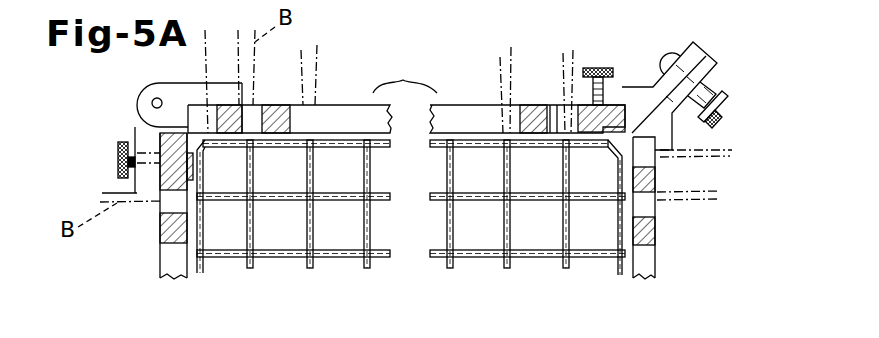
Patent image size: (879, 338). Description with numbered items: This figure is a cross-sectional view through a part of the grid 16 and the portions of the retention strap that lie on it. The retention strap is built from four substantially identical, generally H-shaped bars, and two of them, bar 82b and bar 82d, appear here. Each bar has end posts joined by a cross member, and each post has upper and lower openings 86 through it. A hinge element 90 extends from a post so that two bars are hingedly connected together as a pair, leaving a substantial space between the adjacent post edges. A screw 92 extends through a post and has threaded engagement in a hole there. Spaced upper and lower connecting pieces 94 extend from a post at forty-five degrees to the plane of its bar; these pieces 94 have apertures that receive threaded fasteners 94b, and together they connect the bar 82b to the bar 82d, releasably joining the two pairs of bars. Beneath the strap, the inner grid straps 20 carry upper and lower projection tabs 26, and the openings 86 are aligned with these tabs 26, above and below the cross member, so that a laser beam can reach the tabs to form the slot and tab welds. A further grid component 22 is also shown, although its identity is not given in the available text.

The wire rack 16 is at (407, 226).
The inner grid strap 20 is at (282, 192).
The side frame bar 22 is at (339, 142).
The projection tab 26 is at (190, 184).
The bar 82b is at (538, 106).
The bar 82d is at (656, 228).
The opening 86 is at (258, 108).
The hinge element 90 is at (158, 87).
The screw 92 is at (118, 153).
The connecting piece 94 is at (715, 56).
The threaded fastener 94b is at (719, 118).